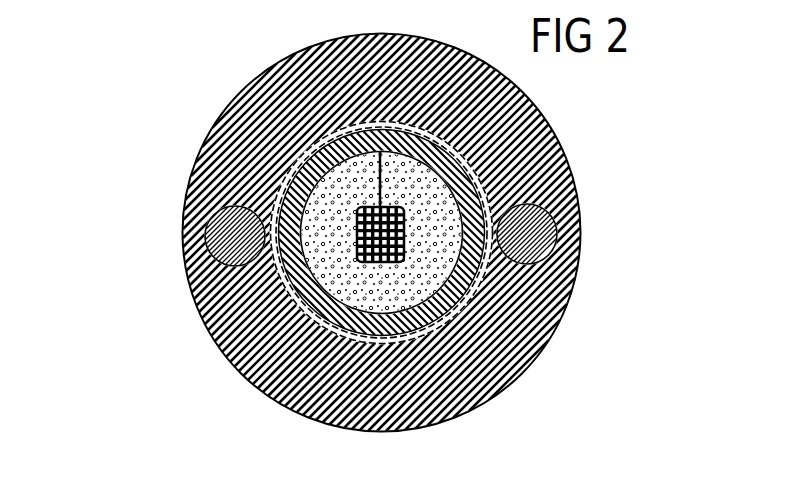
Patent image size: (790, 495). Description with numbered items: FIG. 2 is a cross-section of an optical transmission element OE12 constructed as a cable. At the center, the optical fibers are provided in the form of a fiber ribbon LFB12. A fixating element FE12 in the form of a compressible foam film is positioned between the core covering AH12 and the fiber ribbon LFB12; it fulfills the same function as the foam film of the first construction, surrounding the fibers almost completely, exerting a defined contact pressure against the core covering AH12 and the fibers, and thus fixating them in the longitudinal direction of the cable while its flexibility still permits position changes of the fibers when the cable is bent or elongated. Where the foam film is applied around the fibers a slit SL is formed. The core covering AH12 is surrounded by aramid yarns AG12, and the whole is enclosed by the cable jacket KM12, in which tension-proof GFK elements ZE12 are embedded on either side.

The transmission element OE12 is at (199, 113).
The cable jacket KM12 is at (500, 368).
The tension-proof GFK elements ZE12 is at (530, 237).
The aramid yarns AG12 is at (463, 298).
The core covering AH12 is at (293, 267).
The fixating element FE12 is at (328, 203).
The fiber ribbon LFB12 is at (400, 222).
The slit SL is at (378, 187).